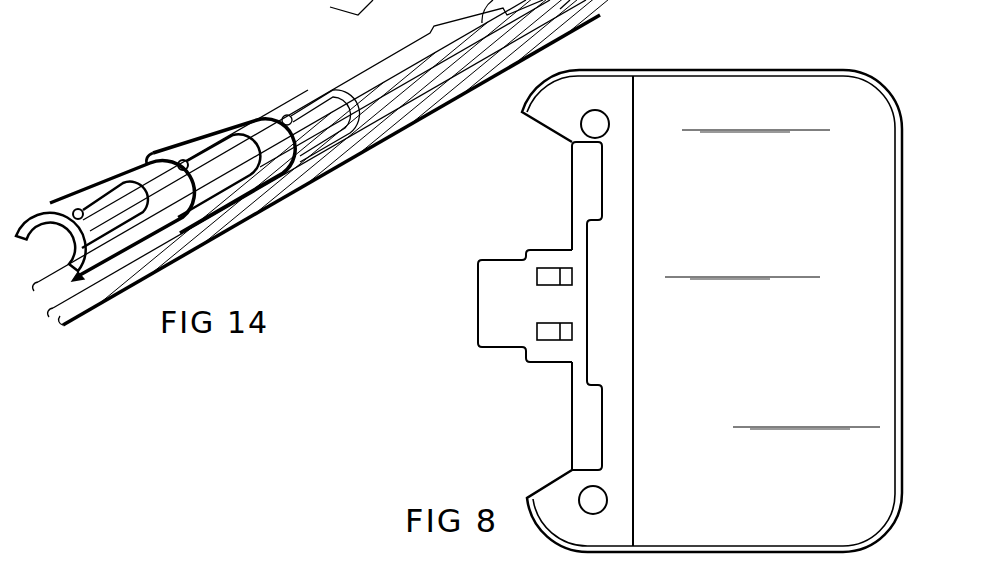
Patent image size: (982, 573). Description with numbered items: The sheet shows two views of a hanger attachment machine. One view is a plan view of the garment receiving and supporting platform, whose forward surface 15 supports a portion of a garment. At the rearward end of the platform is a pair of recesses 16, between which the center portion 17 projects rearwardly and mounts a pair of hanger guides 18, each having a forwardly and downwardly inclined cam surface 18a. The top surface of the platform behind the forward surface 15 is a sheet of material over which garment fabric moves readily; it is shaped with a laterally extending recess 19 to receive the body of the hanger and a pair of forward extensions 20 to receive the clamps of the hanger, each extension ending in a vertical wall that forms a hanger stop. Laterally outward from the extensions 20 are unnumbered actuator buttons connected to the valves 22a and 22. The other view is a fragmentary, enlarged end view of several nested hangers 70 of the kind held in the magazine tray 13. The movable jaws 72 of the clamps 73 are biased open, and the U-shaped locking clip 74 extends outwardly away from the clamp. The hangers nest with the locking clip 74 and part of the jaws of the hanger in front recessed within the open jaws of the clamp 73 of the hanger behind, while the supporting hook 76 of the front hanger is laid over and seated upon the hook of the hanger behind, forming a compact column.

In FIG. 14, the magazine tray 13 is at (288, 194).
In FIG. 14, the hanger 70 is at (105, 167).
In FIG. 14, the movable jaw 72 is at (82, 184).
In FIG. 14, the clamp 73 is at (41, 211).
In FIG. 14, the U-shaped locking clip 74 is at (307, 100).
In FIG. 14, the supporting hook 76 is at (399, 58).
In FIG. 8, the forward surface 15 is at (784, 90).
In FIG. 8, the recess 16 is at (549, 306).
In FIG. 8, the center portion 17 is at (499, 308).
In FIG. 8, the hanger guide 18 is at (537, 278).
In FIG. 8, the cam surface 18a is at (572, 335).
In FIG. 8, the laterally extending recess 19 is at (581, 236).
In FIG. 8, the forward extension 20 is at (584, 181).
In FIG. 8, the valve 22 is at (597, 112).
In FIG. 8, the valve 22a is at (607, 501).